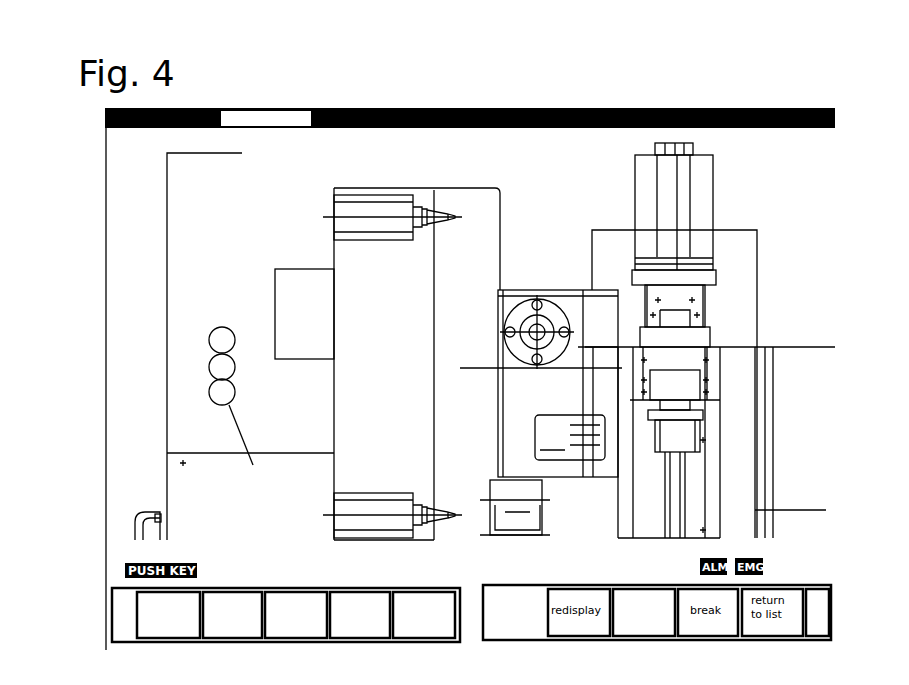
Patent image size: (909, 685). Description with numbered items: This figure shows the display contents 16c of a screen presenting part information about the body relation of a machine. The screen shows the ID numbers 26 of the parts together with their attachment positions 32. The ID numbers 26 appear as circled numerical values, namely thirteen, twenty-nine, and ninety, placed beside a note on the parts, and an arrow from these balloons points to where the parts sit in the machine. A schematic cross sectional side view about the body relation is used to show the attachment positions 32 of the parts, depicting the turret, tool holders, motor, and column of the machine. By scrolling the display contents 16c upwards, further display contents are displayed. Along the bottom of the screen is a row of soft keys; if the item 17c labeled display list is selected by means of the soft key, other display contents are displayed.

The attachment positions 32 is at (557, 158).
The display contents 16c is at (755, 152).
The ID numbers 26 is at (200, 367).
The item of display list 17c is at (132, 618).